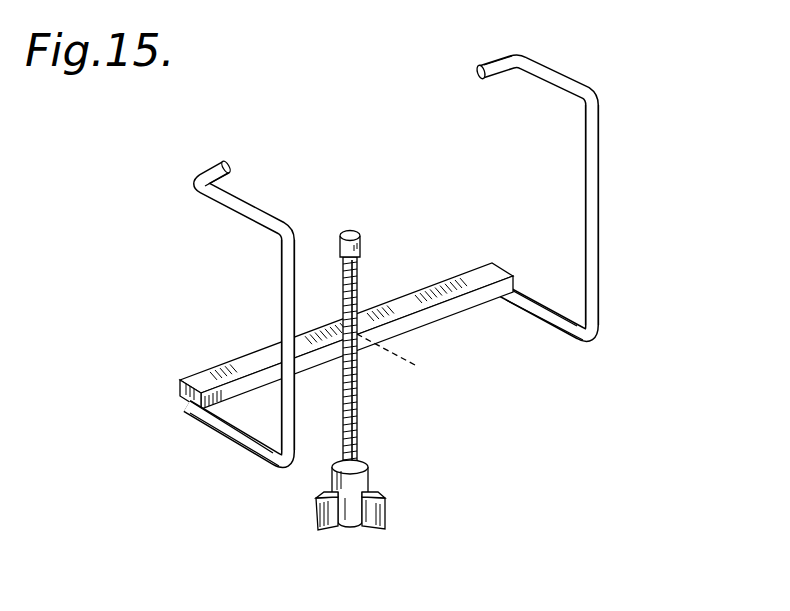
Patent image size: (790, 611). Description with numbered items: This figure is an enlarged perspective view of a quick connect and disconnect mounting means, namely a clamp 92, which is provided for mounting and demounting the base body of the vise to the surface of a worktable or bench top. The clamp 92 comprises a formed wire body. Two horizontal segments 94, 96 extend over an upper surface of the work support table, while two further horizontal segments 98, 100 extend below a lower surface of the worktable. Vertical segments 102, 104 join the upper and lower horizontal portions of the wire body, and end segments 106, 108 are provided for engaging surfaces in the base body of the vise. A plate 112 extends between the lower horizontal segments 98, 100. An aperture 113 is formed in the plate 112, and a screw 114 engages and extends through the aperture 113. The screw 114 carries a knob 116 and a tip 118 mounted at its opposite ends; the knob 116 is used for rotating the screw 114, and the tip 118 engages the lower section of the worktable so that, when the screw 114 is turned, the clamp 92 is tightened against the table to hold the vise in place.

The clamp 92 is at (626, 140).
The horizontal segment 94 is at (244, 311).
The horizontal segment 96 is at (559, 199).
The horizontal segment 98 is at (235, 440).
The horizontal segment 100 is at (563, 333).
The vertical segment 102 is at (281, 274).
The vertical segment 104 is at (587, 163).
The segment 106 is at (210, 161).
The segment 108 is at (484, 60).
The plate 112 is at (457, 283).
The aperture 113 is at (409, 358).
The screw 114 is at (390, 331).
The knob 116 is at (331, 522).
The tip 118 is at (360, 236).